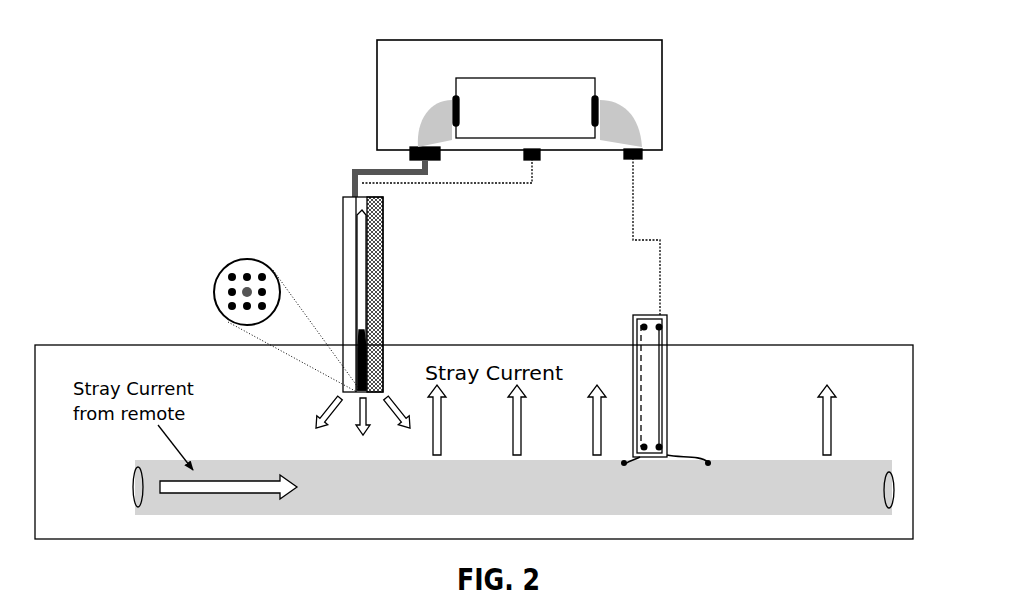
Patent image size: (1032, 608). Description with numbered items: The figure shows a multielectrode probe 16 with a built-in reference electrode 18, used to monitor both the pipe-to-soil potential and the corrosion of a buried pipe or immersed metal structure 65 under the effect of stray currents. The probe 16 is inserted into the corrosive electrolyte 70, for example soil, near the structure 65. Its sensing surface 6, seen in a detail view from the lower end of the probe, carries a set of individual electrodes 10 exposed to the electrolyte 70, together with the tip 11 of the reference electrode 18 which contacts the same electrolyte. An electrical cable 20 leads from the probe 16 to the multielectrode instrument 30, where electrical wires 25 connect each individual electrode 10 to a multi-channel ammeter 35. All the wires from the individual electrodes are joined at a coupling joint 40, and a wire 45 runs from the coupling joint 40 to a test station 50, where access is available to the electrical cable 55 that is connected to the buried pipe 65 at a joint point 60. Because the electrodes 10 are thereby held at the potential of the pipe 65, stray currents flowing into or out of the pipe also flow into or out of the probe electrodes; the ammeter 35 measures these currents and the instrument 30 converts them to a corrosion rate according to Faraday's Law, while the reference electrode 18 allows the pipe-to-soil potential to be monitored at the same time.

The sensing surface of multielectrode probe with built-in reference electrode 6 is at (211, 281).
The individual electrodes 10 is at (232, 274).
The tip of reference electrode 11 is at (249, 291).
The multielectrode probe with built-in reference electrode 16 is at (340, 262).
The reference electrode 18 is at (364, 358).
The electrical cable of probe 20 is at (355, 172).
The electrical wires 25 is at (410, 115).
The multielectrode instrument 30 is at (671, 64).
The multi-channel ammeter 35 is at (600, 88).
The coupling joint 40 is at (620, 160).
The wire 45 is at (640, 222).
The test station 50 is at (670, 328).
The electrical cable 55 is at (672, 358).
The joint point 60 is at (708, 457).
The buried pipe or immersed metal structure 65 is at (738, 470).
The electrolyte 70 is at (865, 383).